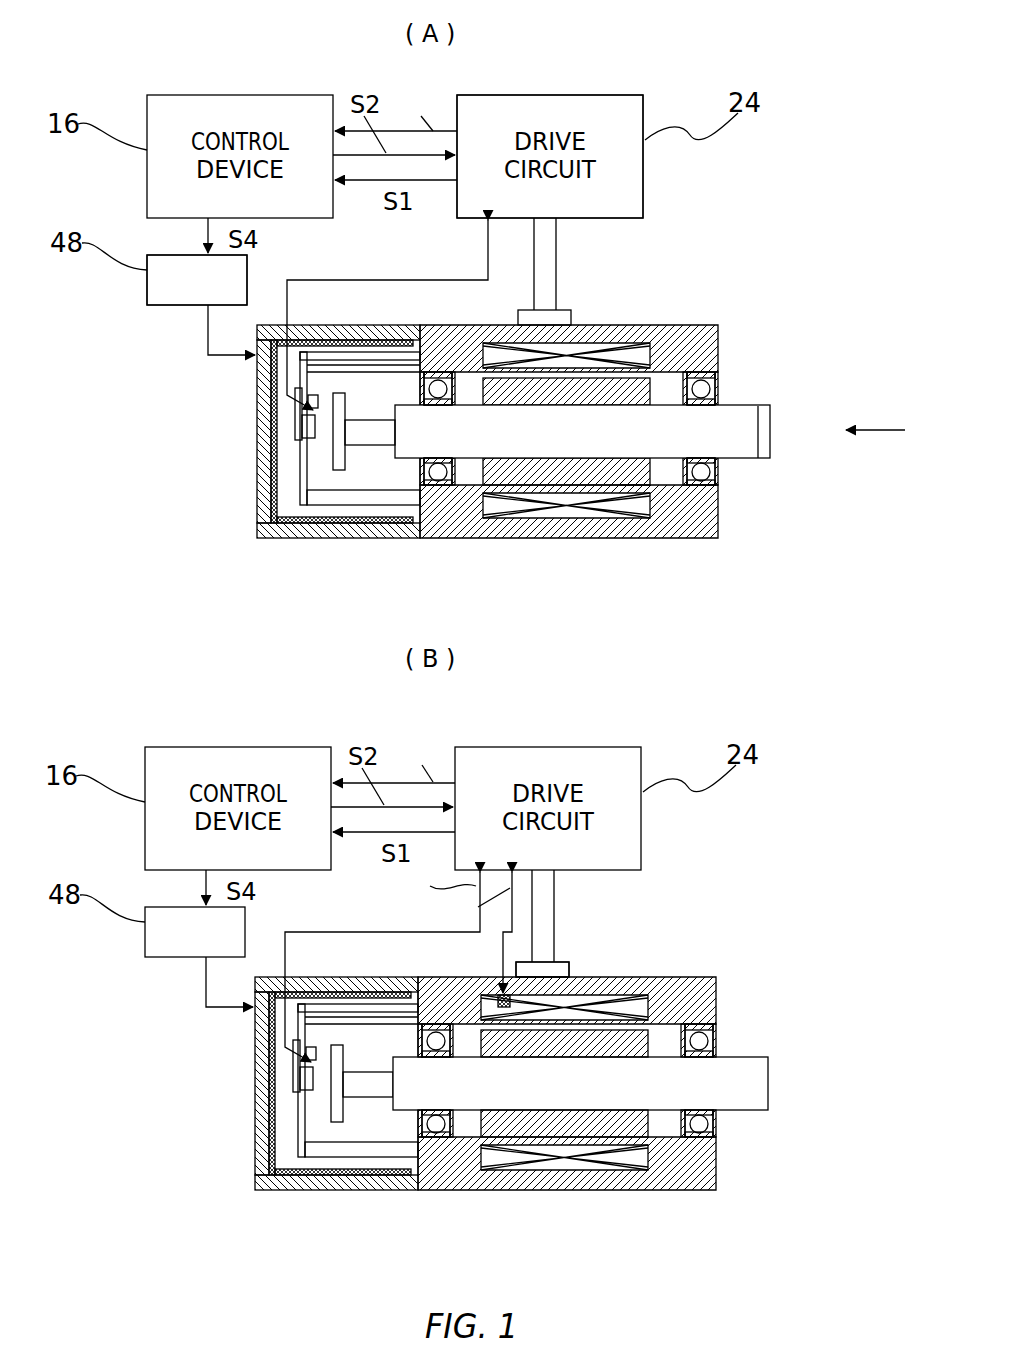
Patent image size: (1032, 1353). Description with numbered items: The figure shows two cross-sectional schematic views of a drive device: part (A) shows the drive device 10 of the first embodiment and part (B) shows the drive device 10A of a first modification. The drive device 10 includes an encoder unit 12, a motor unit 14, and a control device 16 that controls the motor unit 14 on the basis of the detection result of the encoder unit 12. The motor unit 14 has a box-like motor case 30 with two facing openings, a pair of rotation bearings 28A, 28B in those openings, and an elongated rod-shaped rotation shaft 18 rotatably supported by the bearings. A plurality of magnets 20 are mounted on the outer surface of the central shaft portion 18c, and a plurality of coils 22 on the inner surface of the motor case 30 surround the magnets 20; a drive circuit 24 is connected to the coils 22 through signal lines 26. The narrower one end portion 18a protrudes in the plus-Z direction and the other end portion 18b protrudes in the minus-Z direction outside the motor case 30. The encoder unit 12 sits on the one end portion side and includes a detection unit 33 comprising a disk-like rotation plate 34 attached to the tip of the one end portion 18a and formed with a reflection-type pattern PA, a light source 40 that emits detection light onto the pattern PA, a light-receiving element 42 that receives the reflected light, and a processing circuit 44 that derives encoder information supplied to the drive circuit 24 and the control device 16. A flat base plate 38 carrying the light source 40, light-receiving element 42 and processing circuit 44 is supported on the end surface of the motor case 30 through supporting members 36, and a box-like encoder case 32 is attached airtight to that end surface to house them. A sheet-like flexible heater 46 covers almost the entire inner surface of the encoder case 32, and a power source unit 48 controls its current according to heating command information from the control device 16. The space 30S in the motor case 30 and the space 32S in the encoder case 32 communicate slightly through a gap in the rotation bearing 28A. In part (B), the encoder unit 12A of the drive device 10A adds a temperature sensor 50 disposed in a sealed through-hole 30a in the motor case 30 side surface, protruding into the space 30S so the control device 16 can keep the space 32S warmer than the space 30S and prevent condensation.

The drive device 10 is at (485, 346).
The drive device 10A is at (476, 992).
The encoder unit 12 is at (234, 445).
The encoder unit 12A is at (219, 1083).
The motor unit 14 is at (639, 391).
The control device 16 is at (404, 221).
The rotation shaft 18 is at (770, 408).
The one end portion 18a is at (372, 445).
The other end portion 18b is at (758, 460).
The shaft portion 18c is at (650, 500).
The magnets 20 is at (685, 370).
The coils 22 is at (655, 324).
The drive circuit 24 is at (550, 156).
The signal lines 26 is at (560, 300).
The rotation bearing 28A is at (448, 486).
The rotation bearing 28B is at (708, 482).
The motor case 30 is at (615, 340).
The through-hole 30a is at (505, 978).
The space 30S is at (432, 330).
The encoder case 32 is at (262, 372).
The space 32S is at (383, 383).
The detection unit 33 is at (201, 474).
The rotation plate 34 is at (292, 518).
The supporting members 36 is at (356, 540).
The base plate 38 is at (302, 530).
The light source 40 is at (260, 412).
The light-receiving element 42 is at (265, 482).
The processing circuit 44 is at (262, 455).
The heater 46 is at (257, 431).
The power source unit 48 is at (197, 280).
The temperature sensor 50 is at (496, 988).
The pattern PA is at (370, 315).